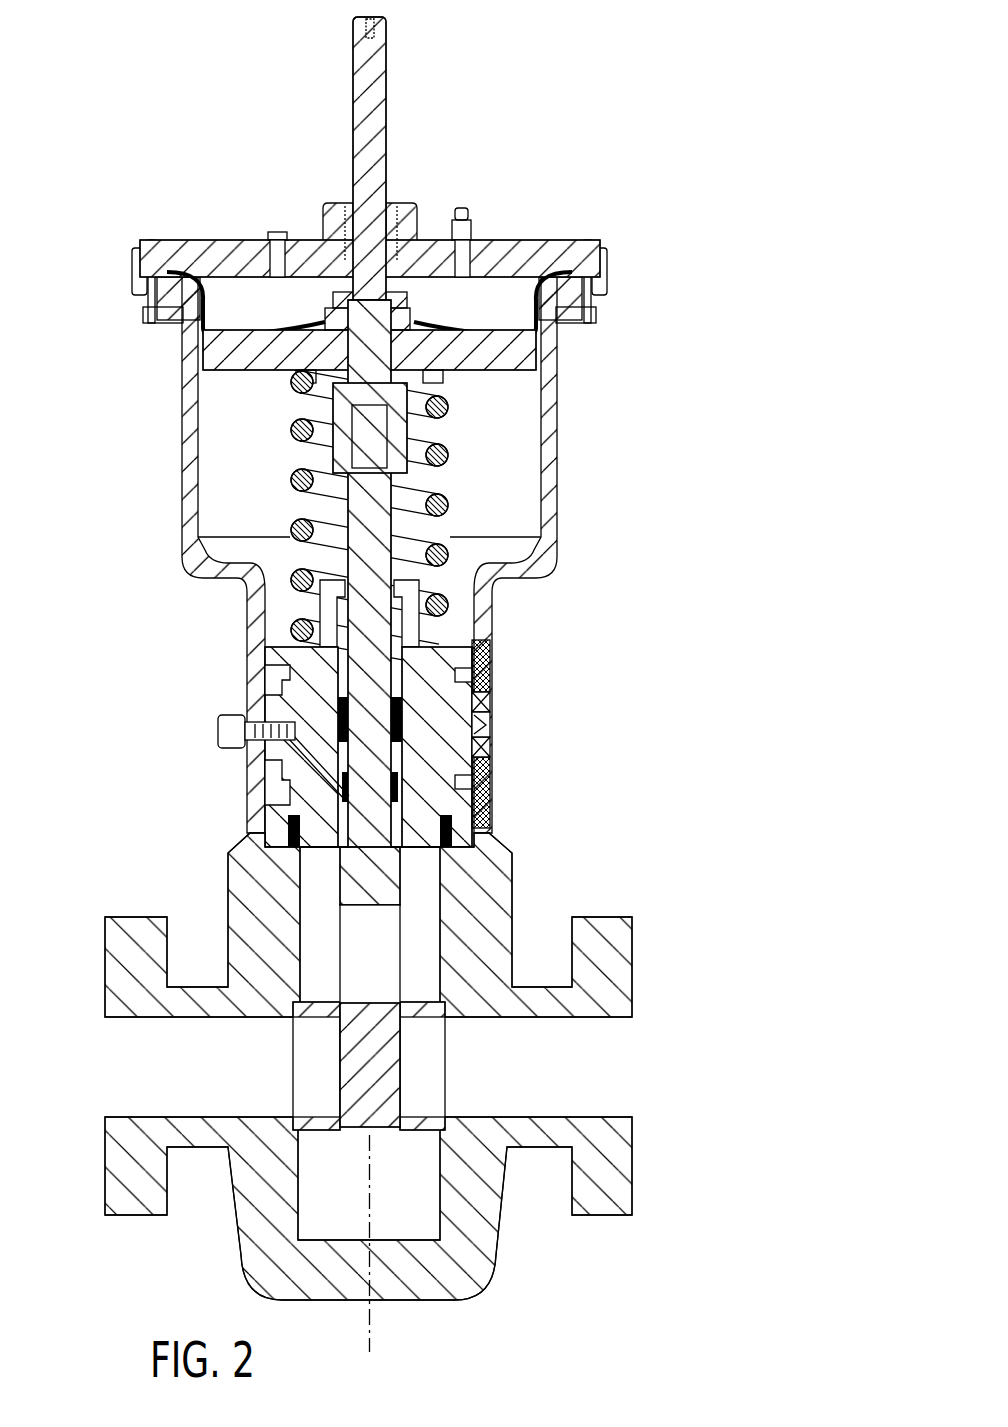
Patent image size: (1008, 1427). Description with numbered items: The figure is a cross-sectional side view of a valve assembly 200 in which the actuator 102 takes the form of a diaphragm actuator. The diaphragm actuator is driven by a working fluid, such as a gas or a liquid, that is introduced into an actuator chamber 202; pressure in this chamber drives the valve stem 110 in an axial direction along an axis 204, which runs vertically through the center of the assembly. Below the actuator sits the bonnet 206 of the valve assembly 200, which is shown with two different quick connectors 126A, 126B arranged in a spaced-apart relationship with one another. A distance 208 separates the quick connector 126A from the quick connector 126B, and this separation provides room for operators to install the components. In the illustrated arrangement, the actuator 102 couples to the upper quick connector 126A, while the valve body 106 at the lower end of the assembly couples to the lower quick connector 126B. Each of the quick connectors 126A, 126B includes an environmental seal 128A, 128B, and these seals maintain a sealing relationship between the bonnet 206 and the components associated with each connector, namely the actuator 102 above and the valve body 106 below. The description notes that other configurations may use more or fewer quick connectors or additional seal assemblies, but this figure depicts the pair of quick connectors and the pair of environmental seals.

The valve assembly 200 is at (628, 46).
The actuator 102 is at (661, 246).
The actuator chamber 202 is at (487, 293).
The valve stem 110 is at (369, 552).
The quick connector 126A is at (540, 641).
The quick connector 126B is at (540, 815).
The environmental seal 128A is at (488, 707).
The environmental seal 128B is at (488, 767).
The distance 208 is at (489, 737).
The bonnet 206 is at (214, 733).
The valve body 106 is at (513, 926).
The axis 204 is at (371, 1320).